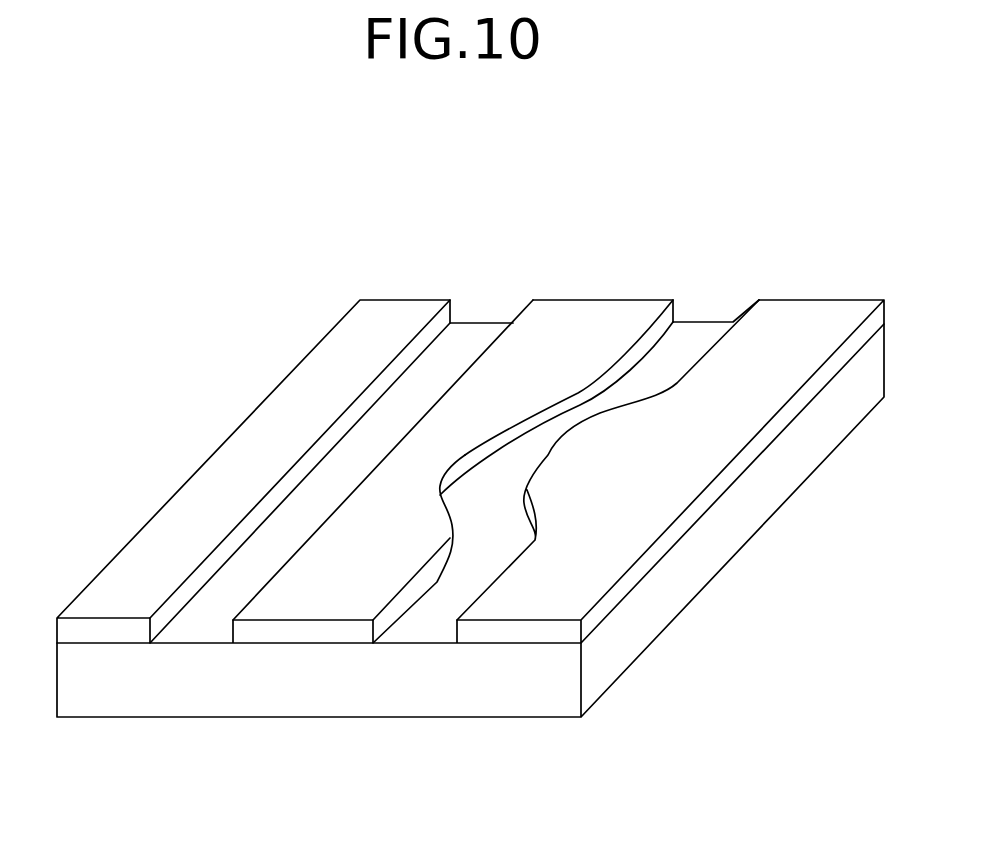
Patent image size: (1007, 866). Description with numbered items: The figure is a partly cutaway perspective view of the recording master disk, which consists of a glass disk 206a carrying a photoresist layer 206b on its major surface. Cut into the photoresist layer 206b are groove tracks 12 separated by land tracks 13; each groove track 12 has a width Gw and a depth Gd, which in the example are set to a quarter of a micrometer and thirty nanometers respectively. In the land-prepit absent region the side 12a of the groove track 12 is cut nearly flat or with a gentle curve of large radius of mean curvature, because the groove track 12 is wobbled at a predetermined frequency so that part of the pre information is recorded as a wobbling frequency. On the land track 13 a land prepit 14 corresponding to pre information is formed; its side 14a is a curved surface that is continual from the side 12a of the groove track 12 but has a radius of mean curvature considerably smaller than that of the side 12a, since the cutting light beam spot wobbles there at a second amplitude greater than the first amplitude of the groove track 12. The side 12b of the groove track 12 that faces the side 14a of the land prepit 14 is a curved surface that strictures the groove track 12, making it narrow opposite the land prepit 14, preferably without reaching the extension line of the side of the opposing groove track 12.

The groove track 12 is at (313, 462).
The side of groove track 12a is at (401, 612).
The side of groove track facing land prepit 12b is at (518, 519).
The land track 13 is at (565, 318).
The land prepit 14 is at (472, 487).
The side of land prepit 14a is at (509, 428).
The glass disk 206a is at (608, 672).
The photoresist layer 206b is at (603, 607).
The width of groove track Gw is at (759, 248).
The depth of groove track Gd is at (422, 620).